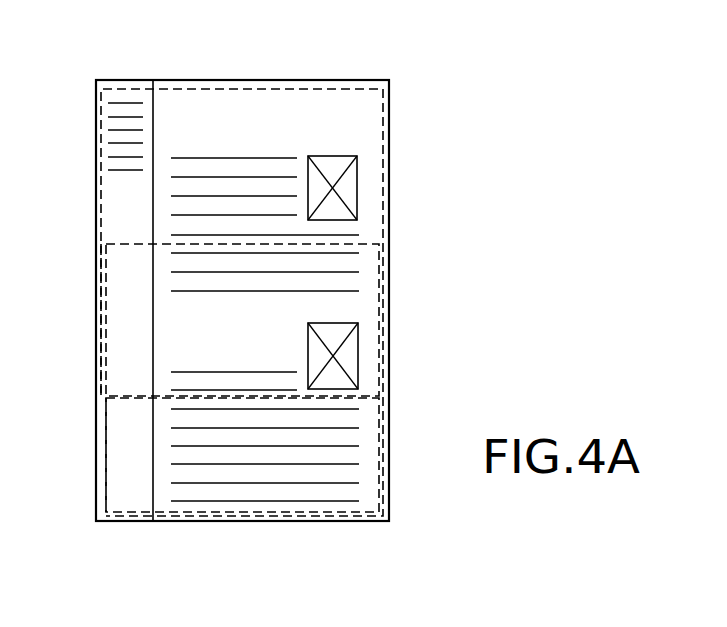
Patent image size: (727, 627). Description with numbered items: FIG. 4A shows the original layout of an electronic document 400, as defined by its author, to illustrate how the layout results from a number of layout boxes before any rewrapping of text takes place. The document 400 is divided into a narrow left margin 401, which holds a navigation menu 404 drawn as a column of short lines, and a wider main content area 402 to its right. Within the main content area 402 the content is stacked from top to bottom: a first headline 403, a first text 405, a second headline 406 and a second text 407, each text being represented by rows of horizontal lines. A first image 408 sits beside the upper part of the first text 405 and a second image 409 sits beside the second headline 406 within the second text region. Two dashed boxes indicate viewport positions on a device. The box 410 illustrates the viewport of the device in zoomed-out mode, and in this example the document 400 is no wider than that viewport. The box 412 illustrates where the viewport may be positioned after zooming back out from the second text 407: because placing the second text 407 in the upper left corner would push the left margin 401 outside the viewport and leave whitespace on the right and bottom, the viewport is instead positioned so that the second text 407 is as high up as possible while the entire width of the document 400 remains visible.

The document 400 is at (514, 143).
The left margin 401 is at (128, 83).
The main content area 402 is at (370, 97).
The first headline 403 is at (241, 131).
The navigation menu 404 is at (106, 149).
The first text 405 is at (365, 276).
The second headline 406 is at (238, 345).
The second text 407 is at (358, 478).
The first image 408 is at (350, 190).
The second image 409 is at (355, 353).
The box illustrating viewport in zoomed-out mode 410 is at (101, 332).
The box illustrating viewport position after zoom-out 412 is at (106, 458).